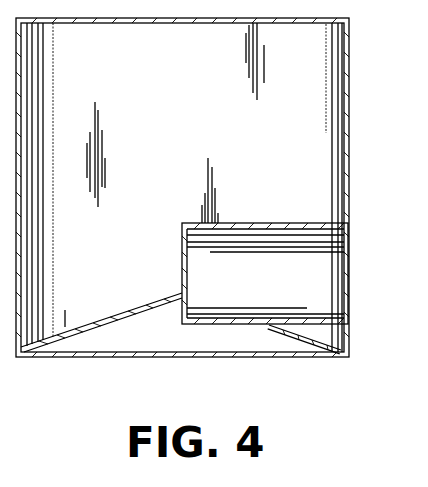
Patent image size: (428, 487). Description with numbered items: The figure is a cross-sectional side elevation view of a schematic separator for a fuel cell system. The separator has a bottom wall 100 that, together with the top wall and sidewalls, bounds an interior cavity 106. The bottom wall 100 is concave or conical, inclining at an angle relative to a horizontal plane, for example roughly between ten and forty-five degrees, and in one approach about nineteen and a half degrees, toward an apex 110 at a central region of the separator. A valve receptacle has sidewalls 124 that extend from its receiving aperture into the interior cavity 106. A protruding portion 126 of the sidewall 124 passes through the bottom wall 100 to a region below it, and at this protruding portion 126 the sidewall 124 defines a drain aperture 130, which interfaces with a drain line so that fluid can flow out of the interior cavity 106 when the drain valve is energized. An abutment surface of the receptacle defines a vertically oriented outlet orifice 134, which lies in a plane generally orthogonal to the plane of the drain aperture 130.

The bottom wall 100 is at (128, 317).
The interior cavity 106 is at (205, 119).
The apex 110 is at (183, 294).
The sidewalls of the valve receptacle 124 is at (280, 223).
The protruding portion 126 is at (198, 326).
The drain aperture 130 is at (234, 326).
The outlet orifice 134 is at (183, 258).